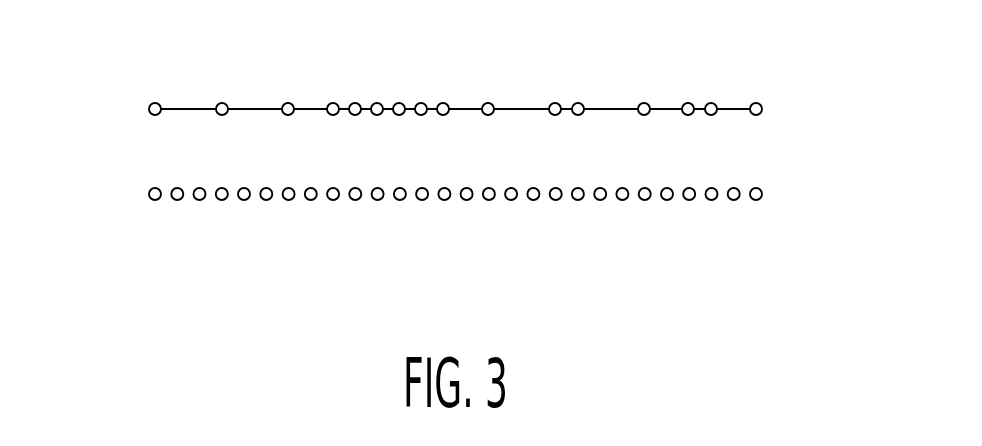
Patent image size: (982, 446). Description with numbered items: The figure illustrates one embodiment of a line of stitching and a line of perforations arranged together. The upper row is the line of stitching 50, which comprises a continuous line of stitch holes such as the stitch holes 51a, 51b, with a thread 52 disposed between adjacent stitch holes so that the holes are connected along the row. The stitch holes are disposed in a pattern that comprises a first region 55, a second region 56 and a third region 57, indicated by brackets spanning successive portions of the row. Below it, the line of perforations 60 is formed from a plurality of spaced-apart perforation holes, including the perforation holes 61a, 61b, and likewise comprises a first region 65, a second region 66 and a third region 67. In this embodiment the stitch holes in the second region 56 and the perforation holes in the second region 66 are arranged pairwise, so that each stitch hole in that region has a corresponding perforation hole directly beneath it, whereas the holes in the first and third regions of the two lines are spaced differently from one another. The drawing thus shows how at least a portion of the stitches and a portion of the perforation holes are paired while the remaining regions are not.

The line of stitching 50 is at (462, 100).
The stitch hole 51a is at (149, 112).
The stitch hole 51b is at (217, 115).
The thread 52 is at (190, 108).
The first region 55 is at (320, 100).
The second region 56 is at (455, 100).
The third region 57 is at (613, 82).
The line of perforations 60 is at (508, 243).
The perforation hole 61a is at (770, 203).
The perforation hole 61b is at (733, 201).
The first region 65 is at (322, 203).
The second region 66 is at (458, 203).
The third region 67 is at (763, 203).